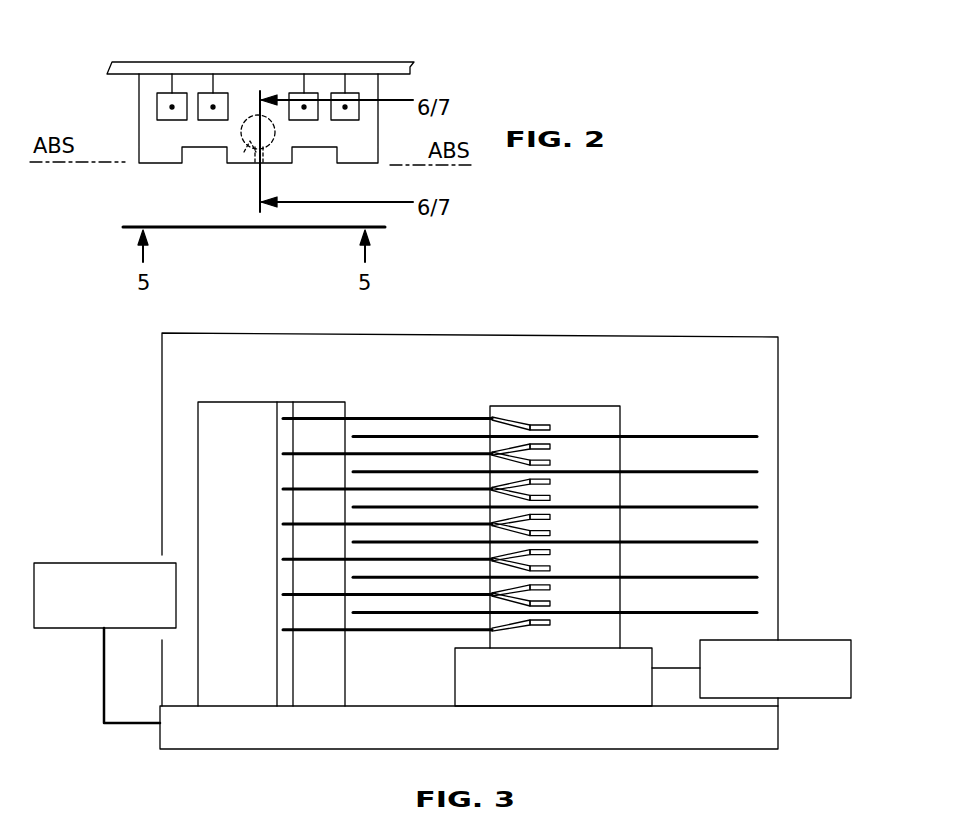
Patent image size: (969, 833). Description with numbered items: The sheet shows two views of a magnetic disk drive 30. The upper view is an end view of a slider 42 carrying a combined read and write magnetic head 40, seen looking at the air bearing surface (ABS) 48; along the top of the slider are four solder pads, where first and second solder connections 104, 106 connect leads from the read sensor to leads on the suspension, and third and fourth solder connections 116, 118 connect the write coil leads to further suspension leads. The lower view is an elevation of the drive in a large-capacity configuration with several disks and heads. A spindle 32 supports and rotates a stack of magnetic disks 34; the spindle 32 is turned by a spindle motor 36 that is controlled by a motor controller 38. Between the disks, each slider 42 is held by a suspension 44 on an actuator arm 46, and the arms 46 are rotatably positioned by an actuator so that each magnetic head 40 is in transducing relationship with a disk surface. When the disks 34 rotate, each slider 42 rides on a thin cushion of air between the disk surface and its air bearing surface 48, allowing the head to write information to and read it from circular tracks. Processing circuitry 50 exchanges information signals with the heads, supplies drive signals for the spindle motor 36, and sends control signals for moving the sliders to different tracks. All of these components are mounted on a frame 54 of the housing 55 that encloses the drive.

In FIG. 3, the magnetic disk drive 30 is at (672, 408).
In FIG. 3, the spindle 32 is at (608, 406).
In FIG. 3, the magnetic disk 34 is at (754, 438).
In FIG. 3, the spindle motor 36 is at (568, 690).
In FIG. 3, the motor controller 38 is at (812, 698).
In FIG. 2, the magnetic head 40 is at (241, 153).
In FIG. 2, the slider 42 is at (139, 102).
In FIG. 3, the slider 42 is at (543, 456).
In FIG. 3, the suspension 44 is at (522, 457).
In FIG. 3, the actuator arm 46 is at (460, 453).
In FIG. 2, the air bearing surface 48 is at (58, 163).
In FIG. 3, the processing circuitry 50 is at (78, 563).
In FIG. 3, the frame 54 is at (212, 749).
In FIG. 3, the housing 55 is at (719, 337).
In FIG. 2, the first solder connection 104 is at (157, 93).
In FIG. 2, the second solder connection 106 is at (331, 93).
In FIG. 2, the third solder connection 116 is at (198, 93).
In FIG. 2, the fourth solder connection 118 is at (289, 93).